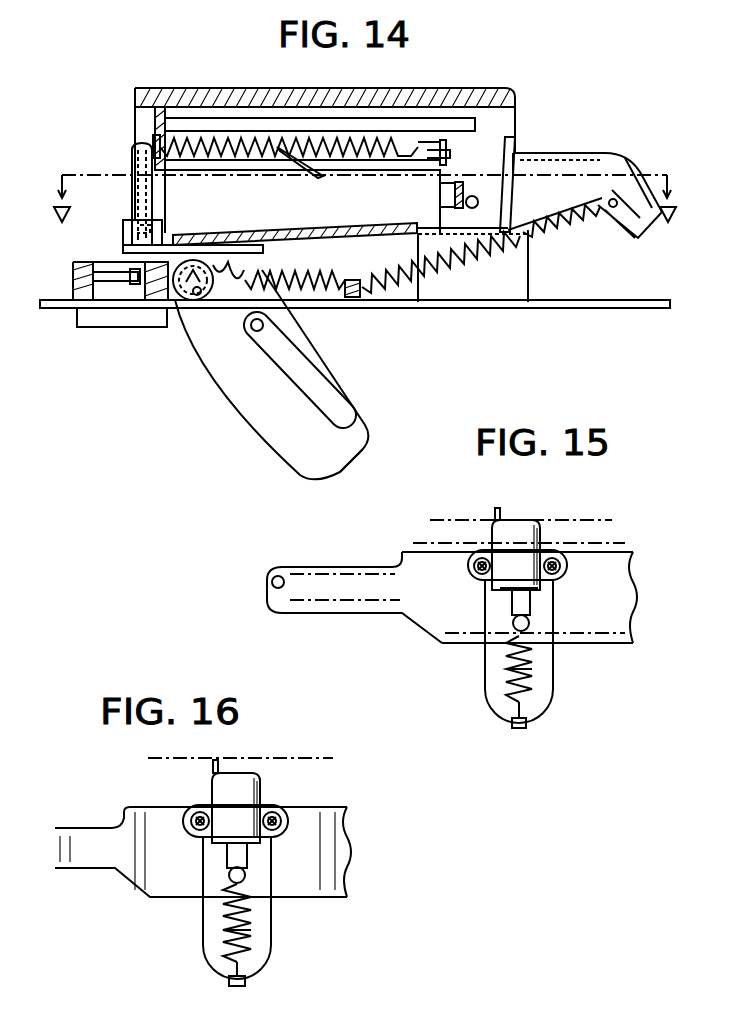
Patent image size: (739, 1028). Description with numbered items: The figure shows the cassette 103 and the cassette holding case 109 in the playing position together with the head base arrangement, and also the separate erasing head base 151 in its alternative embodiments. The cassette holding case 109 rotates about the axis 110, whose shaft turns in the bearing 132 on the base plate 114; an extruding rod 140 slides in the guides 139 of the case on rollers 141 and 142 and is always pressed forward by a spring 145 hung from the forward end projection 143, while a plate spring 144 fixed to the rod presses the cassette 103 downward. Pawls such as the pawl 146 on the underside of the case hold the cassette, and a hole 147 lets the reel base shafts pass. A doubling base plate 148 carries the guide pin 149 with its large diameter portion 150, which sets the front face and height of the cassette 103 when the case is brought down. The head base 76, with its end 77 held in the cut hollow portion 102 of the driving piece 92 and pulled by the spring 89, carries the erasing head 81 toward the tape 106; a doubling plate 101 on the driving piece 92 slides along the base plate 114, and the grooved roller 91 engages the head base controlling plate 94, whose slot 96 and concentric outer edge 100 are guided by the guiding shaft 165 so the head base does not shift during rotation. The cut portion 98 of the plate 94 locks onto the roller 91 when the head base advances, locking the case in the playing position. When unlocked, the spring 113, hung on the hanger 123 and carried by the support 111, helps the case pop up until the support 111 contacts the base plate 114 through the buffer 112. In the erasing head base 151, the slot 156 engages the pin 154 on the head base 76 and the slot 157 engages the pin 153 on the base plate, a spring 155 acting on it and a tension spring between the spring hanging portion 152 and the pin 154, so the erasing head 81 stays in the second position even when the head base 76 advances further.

In FIG. 14, the head base 76 is at (126, 274).
In FIG. 15, the head base 76 is at (432, 613).
In FIG. 16, the head base 76 is at (305, 893).
In FIG. 15, the end of head base 77 is at (354, 613).
In FIG. 15, the erasing head 81 is at (520, 532).
In FIG. 16, the erasing head 81 is at (250, 797).
In FIG. 14, the spring 89 is at (293, 283).
In FIG. 14, the grooved roller 91 is at (174, 318).
In FIG. 14, the head base driving piece 92 is at (80, 276).
In FIG. 14, the head base controlling plate 94 is at (337, 448).
In FIG. 14, the slot 96 is at (305, 380).
In FIG. 14, the cut portion 98 is at (197, 300).
In FIG. 14, the outer edge 100 is at (238, 404).
In FIG. 14, the doubling plate 101 is at (100, 327).
In FIG. 14, the cut hollow portion 102 is at (74, 300).
In FIG. 14, the cassette 103 is at (283, 215).
In FIG. 15, the tape 106 is at (568, 520).
In FIG. 16, the tape 106 is at (264, 758).
In FIG. 14, the cassette holding case 109 is at (462, 92).
In FIG. 14, the axis 110 is at (478, 202).
In FIG. 14, the support of spring 111 is at (560, 166).
In FIG. 14, the buffer 112 is at (648, 222).
In FIG. 14, the spring 113 is at (590, 214).
In FIG. 14, the base plate 114 is at (596, 309).
In FIG. 14, the hanger of spring 123 is at (357, 298).
In FIG. 14, the bearing 132 is at (530, 290).
In FIG. 14, the guide 139 is at (322, 134).
In FIG. 14, the extruding rod 140 is at (447, 167).
In FIG. 14, the roller 141 is at (435, 138).
In FIG. 14, the roller 142 is at (236, 140).
In FIG. 14, the forward end projection 143 is at (158, 126).
In FIG. 14, the plate spring 144 is at (278, 170).
In FIG. 14, the spring 145 is at (375, 152).
In FIG. 14, the pawl 146 is at (153, 232).
In FIG. 14, the hole 147 is at (326, 225).
In FIG. 14, the doubling base plate 148 is at (222, 290).
In FIG. 14, the guide pin 149 is at (134, 171).
In FIG. 14, the large diameter portion 150 is at (128, 225).
In FIG. 15, the erasing head base 151 is at (548, 684).
In FIG. 16, the erasing head base 151 is at (203, 923).
In FIG. 15, the spring hanging portion 152 is at (519, 728).
In FIG. 16, the spring hanging portion 152 is at (237, 986).
In FIG. 15, the pin 153 is at (510, 690).
In FIG. 16, the pin 153 is at (252, 940).
In FIG. 15, the pin 154 is at (529, 622).
In FIG. 16, the pin 154 is at (245, 877).
In FIG. 15, the spring 155 is at (530, 650).
In FIG. 16, the spring 155 is at (242, 910).
In FIG. 15, the slot 156 is at (510, 607).
In FIG. 16, the slot 156 is at (228, 859).
In FIG. 15, the slot 157 is at (507, 670).
In FIG. 16, the slot 157 is at (226, 948).
In FIG. 14, the tension spring 165 is at (265, 326).